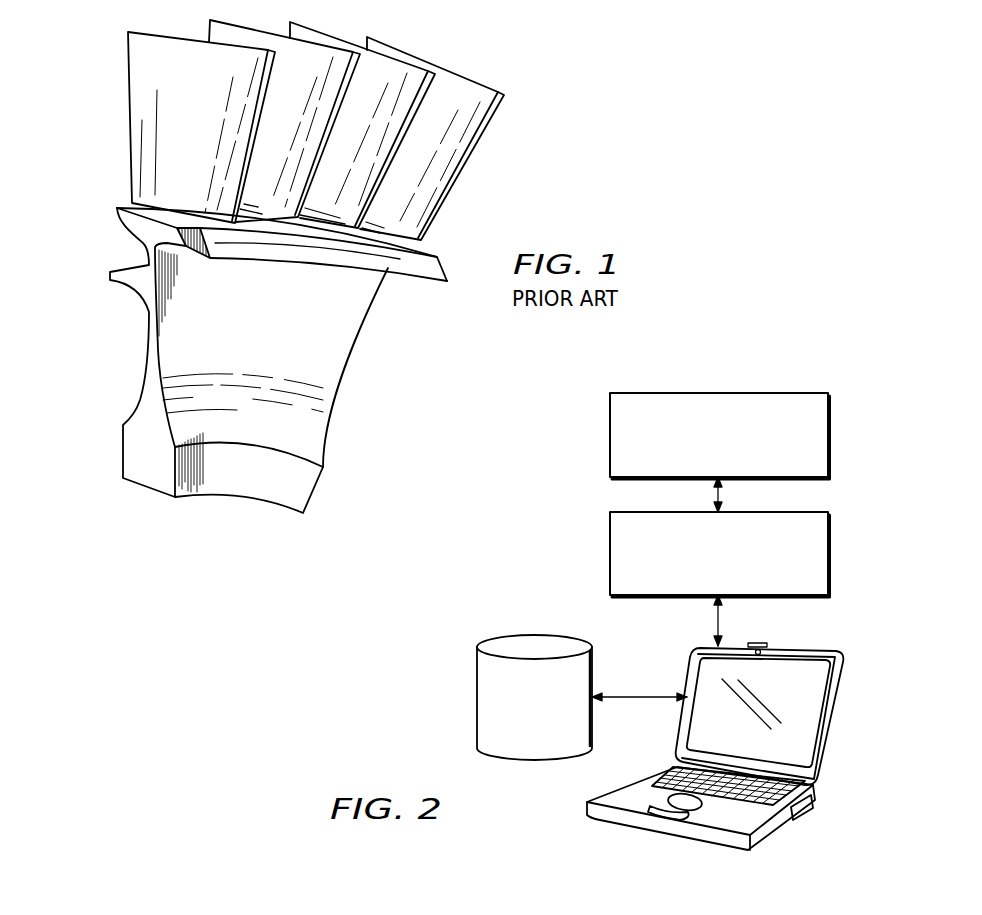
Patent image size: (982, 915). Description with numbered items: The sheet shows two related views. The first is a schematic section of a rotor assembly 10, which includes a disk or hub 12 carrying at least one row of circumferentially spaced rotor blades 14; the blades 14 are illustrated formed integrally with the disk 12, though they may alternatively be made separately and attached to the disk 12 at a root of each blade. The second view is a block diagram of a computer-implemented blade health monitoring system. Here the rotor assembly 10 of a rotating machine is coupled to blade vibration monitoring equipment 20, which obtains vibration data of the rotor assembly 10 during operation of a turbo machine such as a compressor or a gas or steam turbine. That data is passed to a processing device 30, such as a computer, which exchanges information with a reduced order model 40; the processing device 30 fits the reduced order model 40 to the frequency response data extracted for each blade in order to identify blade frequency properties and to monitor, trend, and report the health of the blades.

In FIG. 1, the rotor assembly 10 is at (110, 248).
In FIG. 2, the rotor assembly 10 is at (610, 433).
In FIG. 1, the disk 12 is at (337, 330).
In FIG. 1, the rotor blades 14 is at (390, 68).
In FIG. 2, the blade vibration monitoring equipment 20 is at (610, 553).
In FIG. 2, the processing device 30 is at (783, 827).
In FIG. 2, the reduced order model 40 is at (475, 695).